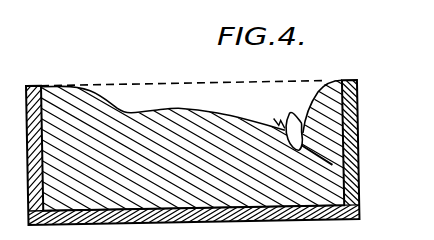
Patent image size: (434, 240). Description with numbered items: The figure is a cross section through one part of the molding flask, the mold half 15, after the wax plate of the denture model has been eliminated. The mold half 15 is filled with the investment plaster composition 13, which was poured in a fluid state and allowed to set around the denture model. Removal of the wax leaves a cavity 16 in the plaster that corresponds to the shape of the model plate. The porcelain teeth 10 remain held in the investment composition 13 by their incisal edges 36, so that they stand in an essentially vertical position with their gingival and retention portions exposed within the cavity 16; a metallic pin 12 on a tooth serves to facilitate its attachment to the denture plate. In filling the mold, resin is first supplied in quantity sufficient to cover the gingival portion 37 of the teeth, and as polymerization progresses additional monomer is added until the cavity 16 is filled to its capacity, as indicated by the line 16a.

The porcelain teeth 10 is at (303, 132).
The metallic pins 12 is at (274, 118).
The investment plaster composition 13 is at (358, 142).
The mold half 15 is at (357, 165).
The cavity 16 is at (306, 100).
The line 16a is at (181, 70).
The incisal edges 36 is at (355, 195).
The gingival portion 37 is at (290, 114).